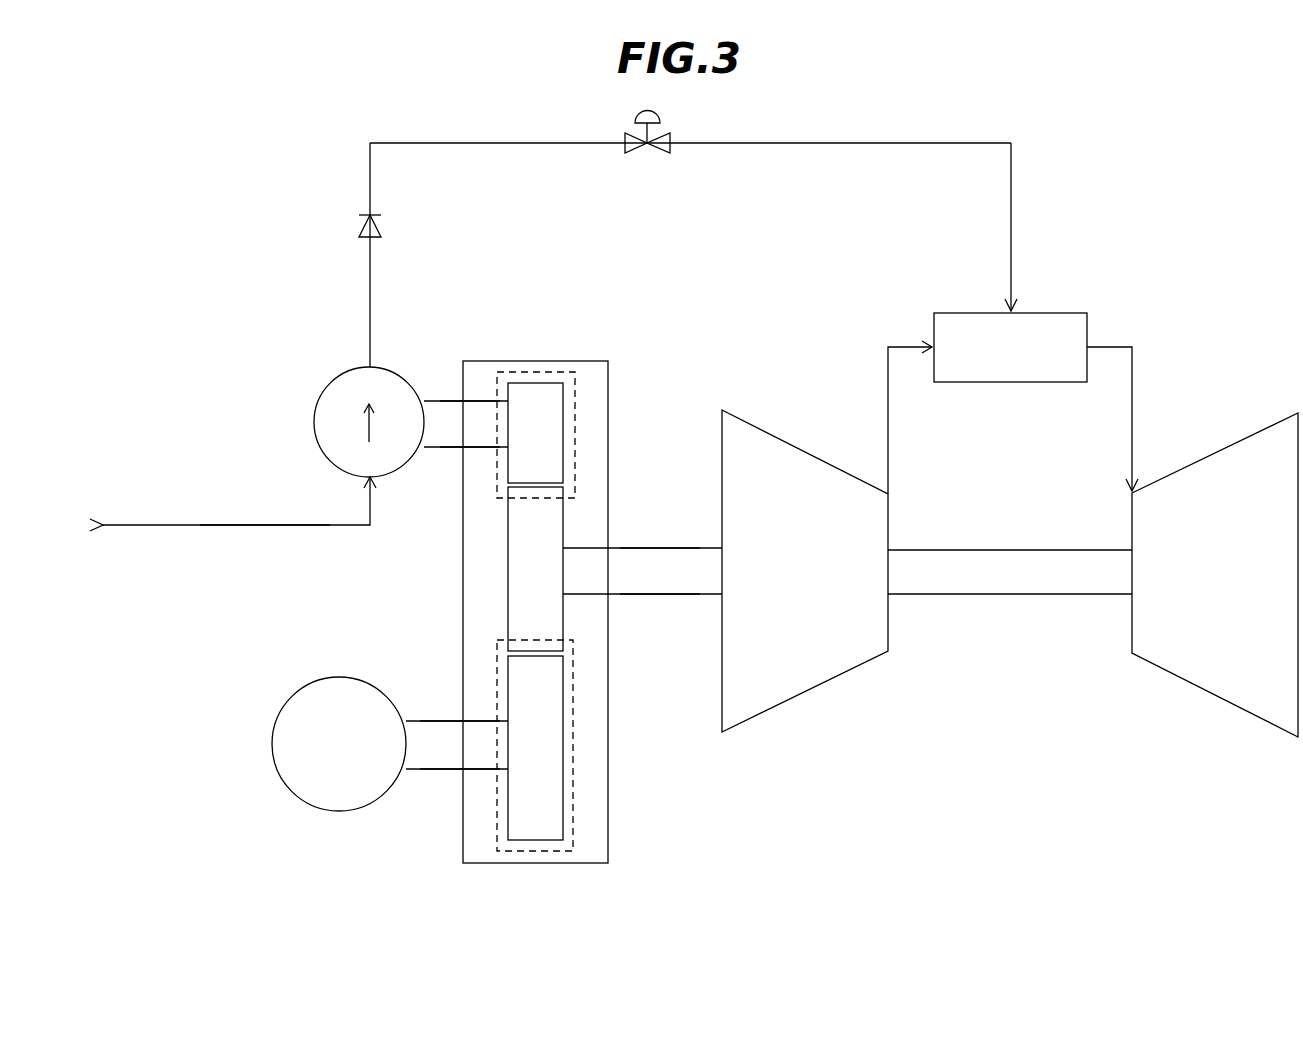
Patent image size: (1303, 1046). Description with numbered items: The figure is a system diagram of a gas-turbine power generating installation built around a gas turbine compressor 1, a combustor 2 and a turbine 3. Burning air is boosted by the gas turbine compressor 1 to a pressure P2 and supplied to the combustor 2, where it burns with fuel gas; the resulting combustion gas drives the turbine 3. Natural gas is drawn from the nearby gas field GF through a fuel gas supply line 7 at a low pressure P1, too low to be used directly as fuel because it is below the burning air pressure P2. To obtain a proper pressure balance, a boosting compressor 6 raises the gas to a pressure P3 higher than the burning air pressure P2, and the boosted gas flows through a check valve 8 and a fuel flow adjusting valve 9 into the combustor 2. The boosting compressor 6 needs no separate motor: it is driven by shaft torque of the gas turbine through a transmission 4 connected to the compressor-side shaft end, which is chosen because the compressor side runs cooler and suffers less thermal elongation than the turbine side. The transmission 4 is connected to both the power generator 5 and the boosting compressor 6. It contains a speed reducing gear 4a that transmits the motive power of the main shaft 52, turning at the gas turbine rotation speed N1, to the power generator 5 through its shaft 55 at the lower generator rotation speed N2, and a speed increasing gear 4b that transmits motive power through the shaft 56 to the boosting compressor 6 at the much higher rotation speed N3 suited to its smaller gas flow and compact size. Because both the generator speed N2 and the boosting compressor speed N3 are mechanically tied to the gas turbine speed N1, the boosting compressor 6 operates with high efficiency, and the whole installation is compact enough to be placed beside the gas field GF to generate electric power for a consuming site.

The gas turbine compressor 1 is at (838, 678).
The combustor 2 is at (1061, 312).
The turbine 3 is at (1183, 683).
The transmission 4 is at (567, 360).
The speed reducing gear 4a is at (573, 740).
The speed increasing gear 4b is at (575, 425).
The power generator 5 is at (358, 811).
The boosting compressor 6 is at (330, 376).
The fuel gas supply line 7 is at (232, 523).
The check valve 8 is at (359, 228).
The fuel flow adjusting valve 9 is at (655, 160).
The main shaft 52 is at (661, 546).
The generator shaft 55 is at (430, 719).
The pump shaft 56 is at (436, 399).
The rotation speed of the gas turbine N1 is at (662, 597).
The rotation speed of the power generator N2 is at (430, 771).
The rotation speed of the boosting compressor N3 is at (437, 449).
The pressure of natural gas P1 is at (265, 527).
The pressure of the burning air P2 is at (886, 402).
The boosted fuel pressure P3 is at (894, 148).
The gas field GF is at (78, 525).